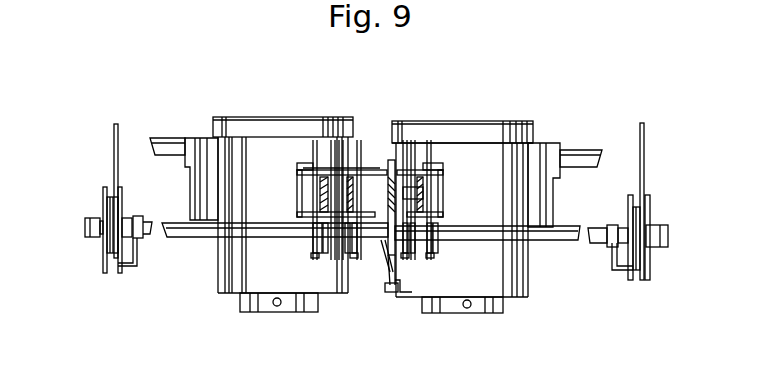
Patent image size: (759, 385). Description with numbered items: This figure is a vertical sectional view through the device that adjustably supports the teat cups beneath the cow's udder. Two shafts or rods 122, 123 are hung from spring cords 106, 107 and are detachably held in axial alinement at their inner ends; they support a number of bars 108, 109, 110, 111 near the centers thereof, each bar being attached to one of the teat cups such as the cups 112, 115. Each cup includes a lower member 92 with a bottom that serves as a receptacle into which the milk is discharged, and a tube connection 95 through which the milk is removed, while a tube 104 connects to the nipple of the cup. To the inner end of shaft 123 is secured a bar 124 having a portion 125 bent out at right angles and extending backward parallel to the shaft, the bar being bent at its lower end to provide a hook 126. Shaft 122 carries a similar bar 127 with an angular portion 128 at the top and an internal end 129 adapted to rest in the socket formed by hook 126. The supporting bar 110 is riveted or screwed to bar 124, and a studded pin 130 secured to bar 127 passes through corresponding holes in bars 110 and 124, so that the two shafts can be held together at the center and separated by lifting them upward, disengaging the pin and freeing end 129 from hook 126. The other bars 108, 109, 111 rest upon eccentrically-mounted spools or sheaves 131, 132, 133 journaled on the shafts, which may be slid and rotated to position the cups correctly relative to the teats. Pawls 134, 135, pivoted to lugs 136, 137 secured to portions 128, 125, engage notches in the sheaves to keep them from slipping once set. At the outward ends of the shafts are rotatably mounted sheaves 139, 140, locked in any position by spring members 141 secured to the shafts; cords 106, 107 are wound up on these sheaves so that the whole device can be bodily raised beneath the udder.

The member 92 is at (240, 300).
The tube connection 95 is at (272, 307).
The tube 104 is at (163, 150).
The spring cord 106 is at (116, 138).
The spring cord 107 is at (645, 141).
The bar 108 is at (320, 188).
The bar 109 is at (298, 182).
The supporting bar 110 is at (392, 158).
The bar 111 is at (423, 197).
The teat cup 112 is at (240, 150).
The teat cup 115 is at (527, 120).
The shaft 122 is at (193, 238).
The shaft 123 is at (557, 241).
The bar 124 is at (398, 268).
The portion 125 is at (420, 165).
The hook 126 is at (389, 292).
The bar 127 is at (388, 245).
The angular portion 128 is at (367, 176).
The internal end 129 is at (383, 268).
The studded pin 130 is at (415, 140).
The sheave 131 is at (311, 253).
The sheave 132 is at (362, 262).
The sheave 133 is at (423, 252).
The pawl 134 is at (283, 140).
The pawl 135 is at (440, 180).
The lug 136 is at (315, 138).
The lug 137 is at (423, 140).
The sheave 139 is at (103, 247).
The sheave 140 is at (643, 230).
The spring member 141 is at (140, 218).